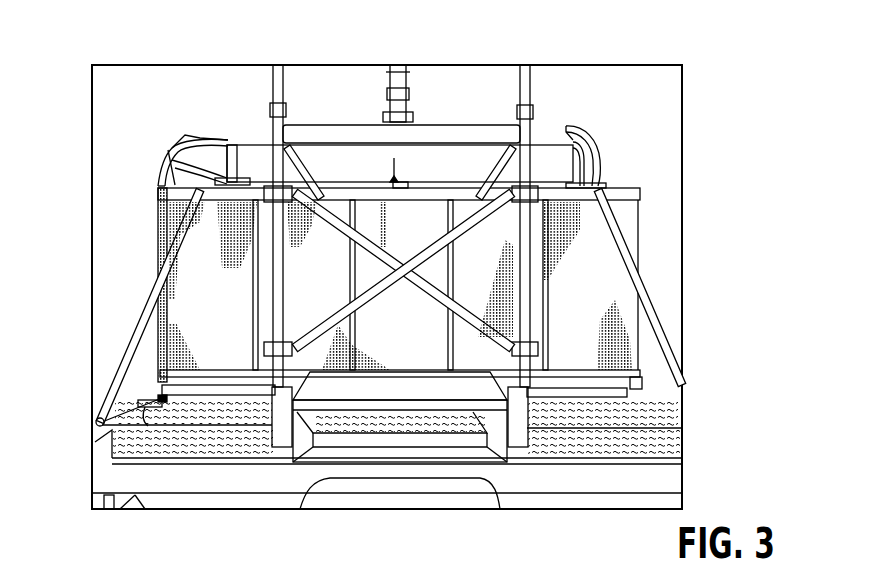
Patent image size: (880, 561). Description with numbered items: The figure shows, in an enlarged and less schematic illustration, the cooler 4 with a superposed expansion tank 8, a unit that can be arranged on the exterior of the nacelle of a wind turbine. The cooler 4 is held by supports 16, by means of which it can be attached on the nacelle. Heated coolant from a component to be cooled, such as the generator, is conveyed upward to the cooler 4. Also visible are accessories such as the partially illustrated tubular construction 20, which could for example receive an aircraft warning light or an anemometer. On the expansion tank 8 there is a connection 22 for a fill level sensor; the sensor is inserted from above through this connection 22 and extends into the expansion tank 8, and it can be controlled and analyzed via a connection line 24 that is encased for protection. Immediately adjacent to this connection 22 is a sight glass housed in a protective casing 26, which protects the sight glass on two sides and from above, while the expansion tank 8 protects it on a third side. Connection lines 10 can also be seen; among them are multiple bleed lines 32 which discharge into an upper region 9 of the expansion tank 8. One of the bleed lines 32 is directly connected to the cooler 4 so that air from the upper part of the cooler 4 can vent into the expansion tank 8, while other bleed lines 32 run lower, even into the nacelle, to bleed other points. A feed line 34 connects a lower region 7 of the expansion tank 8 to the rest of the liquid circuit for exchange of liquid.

The cooler 4 is at (612, 353).
The lower region 7 is at (233, 177).
The expansion tank 8 is at (548, 145).
The upper region 9 is at (237, 137).
The connection lines 10 is at (170, 123).
The supports 16 is at (158, 323).
The tubular construction 20 is at (285, 94).
The connection for a fill level sensor 22 is at (571, 124).
The connection line 24 is at (598, 147).
The protective casing 26 is at (580, 172).
The bleed lines 32 is at (162, 148).
The feed line 34 is at (158, 210).